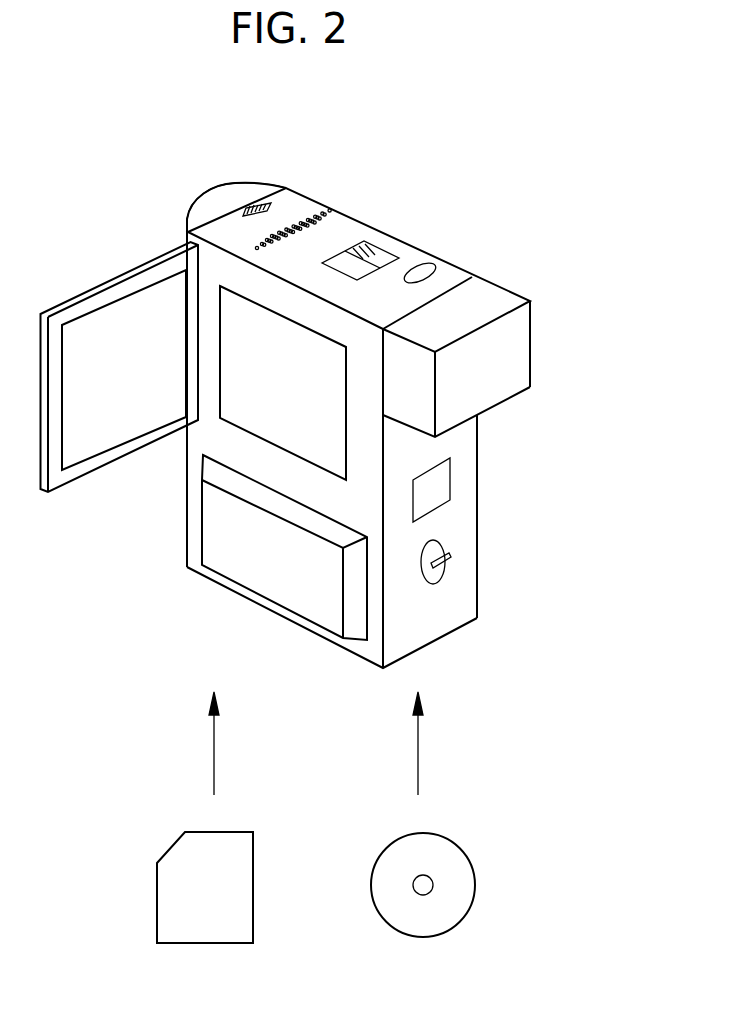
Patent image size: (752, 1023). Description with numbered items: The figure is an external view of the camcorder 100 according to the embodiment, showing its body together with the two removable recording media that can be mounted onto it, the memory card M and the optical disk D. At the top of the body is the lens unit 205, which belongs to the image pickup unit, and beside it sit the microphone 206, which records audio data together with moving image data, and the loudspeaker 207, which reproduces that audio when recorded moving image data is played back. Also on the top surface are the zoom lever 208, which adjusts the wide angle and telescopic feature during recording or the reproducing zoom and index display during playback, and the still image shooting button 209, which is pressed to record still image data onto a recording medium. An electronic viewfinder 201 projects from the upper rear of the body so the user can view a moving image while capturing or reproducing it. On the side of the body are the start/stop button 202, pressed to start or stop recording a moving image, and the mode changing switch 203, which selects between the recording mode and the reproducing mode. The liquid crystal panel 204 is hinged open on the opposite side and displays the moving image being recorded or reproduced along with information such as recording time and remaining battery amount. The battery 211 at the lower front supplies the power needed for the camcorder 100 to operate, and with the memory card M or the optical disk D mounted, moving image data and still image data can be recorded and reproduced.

The camcorder 100 is at (410, 105).
The electronic viewfinder 201 is at (523, 338).
The start/stop button 202 is at (437, 506).
The mode changing switch 203 is at (443, 565).
The liquid crystal panel 204 is at (88, 452).
The lens unit 205 is at (200, 202).
The microphone 206 is at (265, 205).
The loudspeaker 207 is at (318, 218).
The zoom lever 208 is at (387, 241).
The still image shooting button 209 is at (425, 268).
The battery 211 is at (238, 570).
The memory card M is at (240, 884).
The optical disk D is at (456, 883).